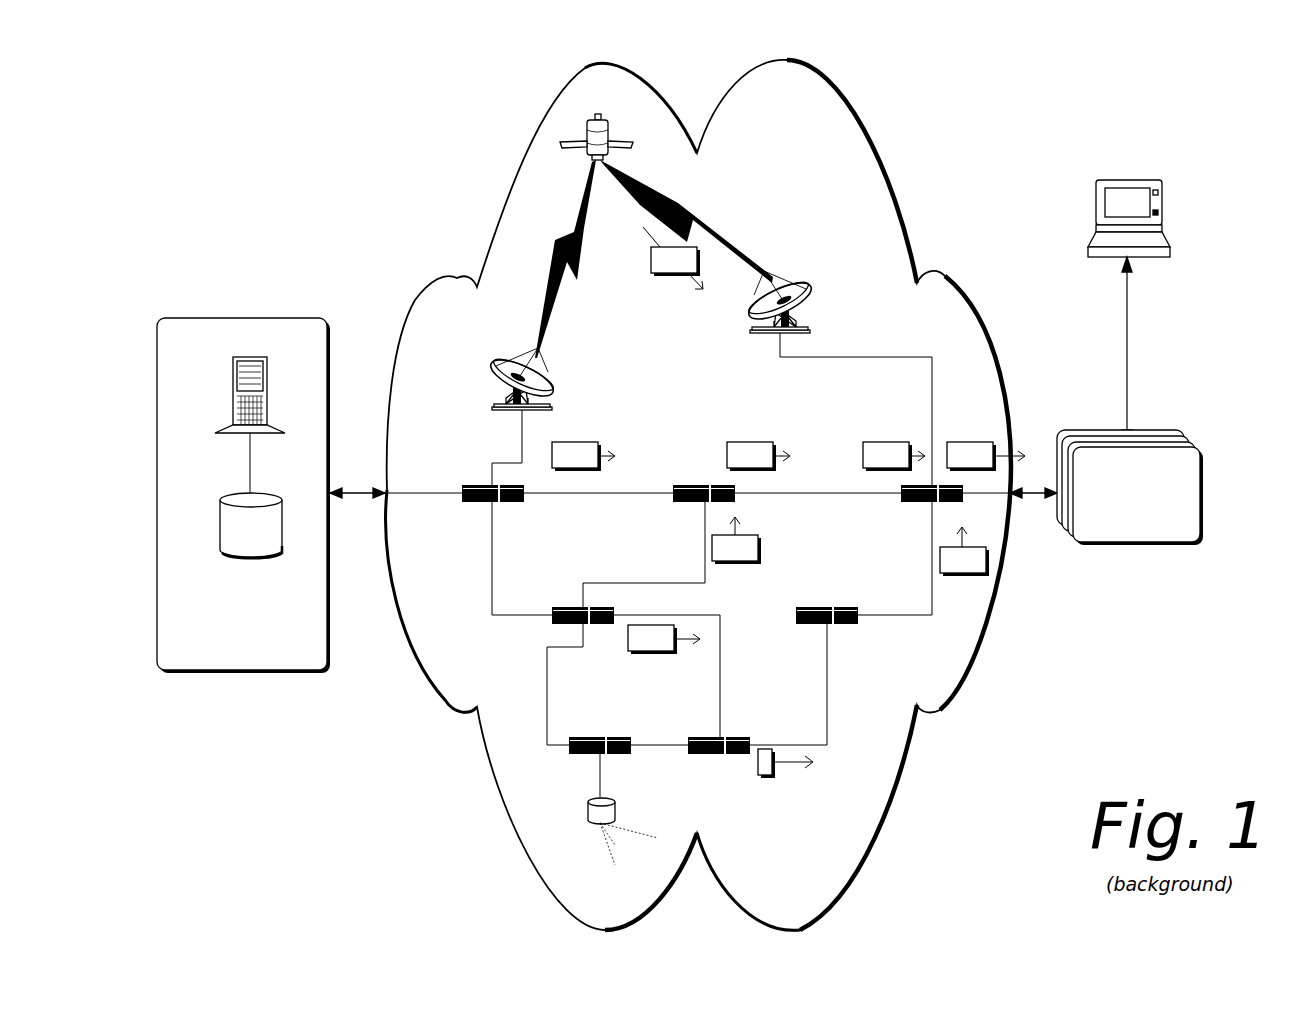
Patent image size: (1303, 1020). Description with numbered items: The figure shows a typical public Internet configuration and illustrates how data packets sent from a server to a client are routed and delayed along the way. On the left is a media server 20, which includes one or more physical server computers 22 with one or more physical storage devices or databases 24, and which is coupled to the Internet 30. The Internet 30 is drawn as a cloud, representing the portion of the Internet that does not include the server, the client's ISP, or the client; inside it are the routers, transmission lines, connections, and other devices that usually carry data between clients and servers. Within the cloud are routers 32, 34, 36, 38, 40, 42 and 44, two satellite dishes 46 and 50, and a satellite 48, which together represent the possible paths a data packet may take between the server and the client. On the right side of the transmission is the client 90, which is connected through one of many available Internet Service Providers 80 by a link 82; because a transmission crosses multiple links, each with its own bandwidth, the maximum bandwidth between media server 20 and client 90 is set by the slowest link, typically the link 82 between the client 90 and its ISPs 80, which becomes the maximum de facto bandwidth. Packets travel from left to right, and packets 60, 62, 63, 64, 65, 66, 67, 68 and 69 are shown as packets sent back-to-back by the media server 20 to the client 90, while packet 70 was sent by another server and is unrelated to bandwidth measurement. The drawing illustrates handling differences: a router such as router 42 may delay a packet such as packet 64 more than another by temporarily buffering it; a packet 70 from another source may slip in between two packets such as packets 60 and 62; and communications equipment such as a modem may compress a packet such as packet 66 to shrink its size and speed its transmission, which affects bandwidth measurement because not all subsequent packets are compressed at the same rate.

The media server 20 is at (316, 351).
The physical server computer 22 is at (233, 400).
The physical storage device or database 24 is at (220, 522).
The Internet 30 is at (847, 200).
The router 32 is at (470, 503).
The router 34 is at (673, 503).
The router 36 is at (901, 503).
The router 38 is at (556, 605).
The router 40 is at (797, 625).
The router 42 is at (573, 754).
The router 44 is at (690, 754).
The satellite dish 46 is at (493, 408).
The satellite 48 is at (599, 114).
The satellite dish 50 is at (750, 334).
The packet 60 is at (986, 456).
The packet 62 is at (758, 456).
The packet 63 is at (583, 456).
The packet 64 is at (625, 832).
The packet 65 is at (736, 540).
The packet 66 is at (770, 778).
The packet 67 is at (664, 639).
The packet 68 is at (673, 258).
The data stream 69 is at (964, 551).
The packet 70 is at (894, 456).
The Internet Service Provider 80 is at (1128, 535).
The link 82 is at (1127, 340).
The client 90 is at (1160, 216).